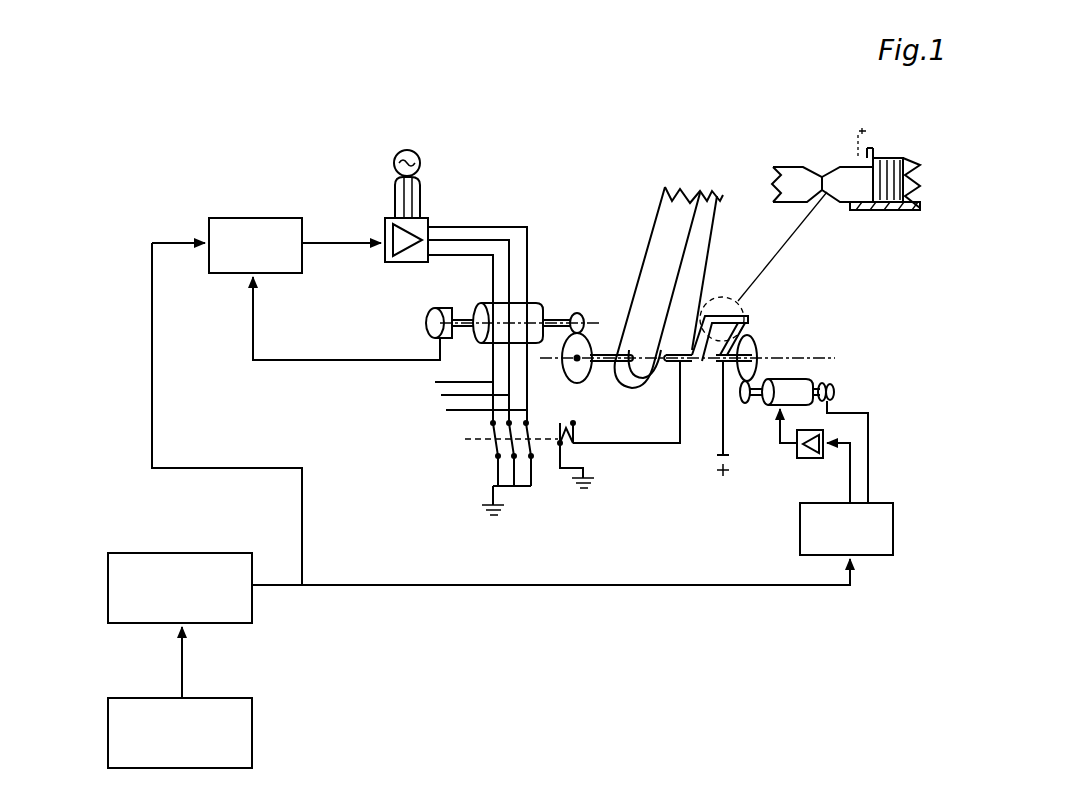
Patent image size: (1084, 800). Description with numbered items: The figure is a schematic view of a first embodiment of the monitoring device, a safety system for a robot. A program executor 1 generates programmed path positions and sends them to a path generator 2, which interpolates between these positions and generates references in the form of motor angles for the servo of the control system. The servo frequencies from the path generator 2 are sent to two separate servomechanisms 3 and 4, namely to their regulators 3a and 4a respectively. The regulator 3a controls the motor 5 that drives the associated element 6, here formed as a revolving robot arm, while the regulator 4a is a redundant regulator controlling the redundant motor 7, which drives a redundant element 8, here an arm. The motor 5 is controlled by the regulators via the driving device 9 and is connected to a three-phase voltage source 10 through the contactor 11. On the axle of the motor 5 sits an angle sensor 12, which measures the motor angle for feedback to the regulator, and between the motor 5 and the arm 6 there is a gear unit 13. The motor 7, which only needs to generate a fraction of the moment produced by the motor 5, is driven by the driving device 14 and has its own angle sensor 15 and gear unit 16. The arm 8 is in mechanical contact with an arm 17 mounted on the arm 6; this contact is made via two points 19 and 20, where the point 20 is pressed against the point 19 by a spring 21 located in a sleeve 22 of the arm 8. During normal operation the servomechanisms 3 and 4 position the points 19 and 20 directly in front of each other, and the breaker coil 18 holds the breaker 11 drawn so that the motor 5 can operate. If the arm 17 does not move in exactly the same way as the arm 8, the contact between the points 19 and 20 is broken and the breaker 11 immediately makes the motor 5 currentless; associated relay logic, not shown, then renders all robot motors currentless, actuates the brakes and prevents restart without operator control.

The program executor 1 is at (253, 722).
The path generator 2 is at (113, 590).
The servomechanism 3 is at (208, 206).
The regulator 3a is at (248, 218).
The servomechanism 4 is at (670, 507).
The regulator 4a is at (800, 530).
The motor 5 is at (536, 303).
The element 6 is at (700, 250).
The redundant motor 7 is at (793, 381).
The redundant element 8 is at (745, 316).
The driving device 9 is at (428, 226).
The three-phase voltage source 10 is at (421, 163).
The contactor 11 is at (490, 448).
The angle sensor 12 is at (447, 310).
The gear unit 13 is at (590, 340).
The driving device 14 is at (812, 458).
The angle sensor 15 is at (835, 385).
The gear unit 16 is at (758, 345).
The arm 17 is at (763, 266).
The breaker coil 18 is at (578, 423).
The point 19 is at (803, 175).
The point 20 is at (842, 178).
The spring 21 is at (888, 204).
The sleeve 22 is at (891, 158).